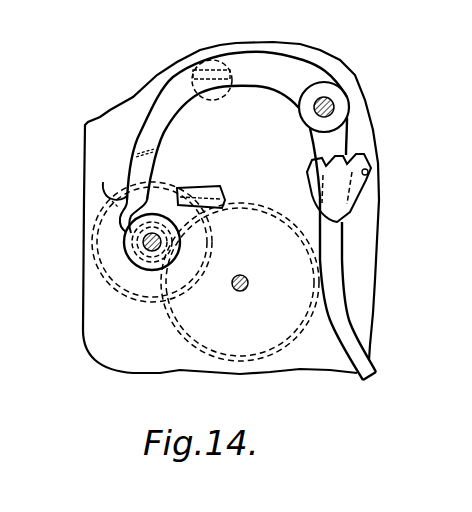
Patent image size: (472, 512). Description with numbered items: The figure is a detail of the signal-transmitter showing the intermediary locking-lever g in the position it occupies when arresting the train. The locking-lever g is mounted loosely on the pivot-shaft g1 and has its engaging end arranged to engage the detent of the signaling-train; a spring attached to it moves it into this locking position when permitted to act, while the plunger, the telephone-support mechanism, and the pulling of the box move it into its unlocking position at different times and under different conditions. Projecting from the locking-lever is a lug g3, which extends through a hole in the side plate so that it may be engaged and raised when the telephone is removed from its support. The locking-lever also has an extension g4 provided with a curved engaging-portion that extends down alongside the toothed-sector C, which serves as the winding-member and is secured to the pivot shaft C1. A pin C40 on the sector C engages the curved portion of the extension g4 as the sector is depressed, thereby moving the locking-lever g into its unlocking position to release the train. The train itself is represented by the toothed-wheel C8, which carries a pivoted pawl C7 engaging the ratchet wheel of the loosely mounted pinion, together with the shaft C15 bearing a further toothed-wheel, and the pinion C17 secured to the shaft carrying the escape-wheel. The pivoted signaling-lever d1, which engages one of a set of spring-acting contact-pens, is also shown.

The intermediary locking-lever g is at (169, 103).
The pivot-shaft g1 is at (326, 98).
The lug g3 is at (221, 68).
The extension g4 is at (343, 298).
The toothed-sector C is at (310, 187).
The pivot shaft C1 is at (248, 283).
The pawl C7 is at (138, 262).
The toothed-wheel C8 is at (190, 325).
The shaft C15 is at (213, 187).
The pinion C17 is at (109, 183).
The pin C40 is at (365, 176).
The signaling-lever d1 is at (146, 246).